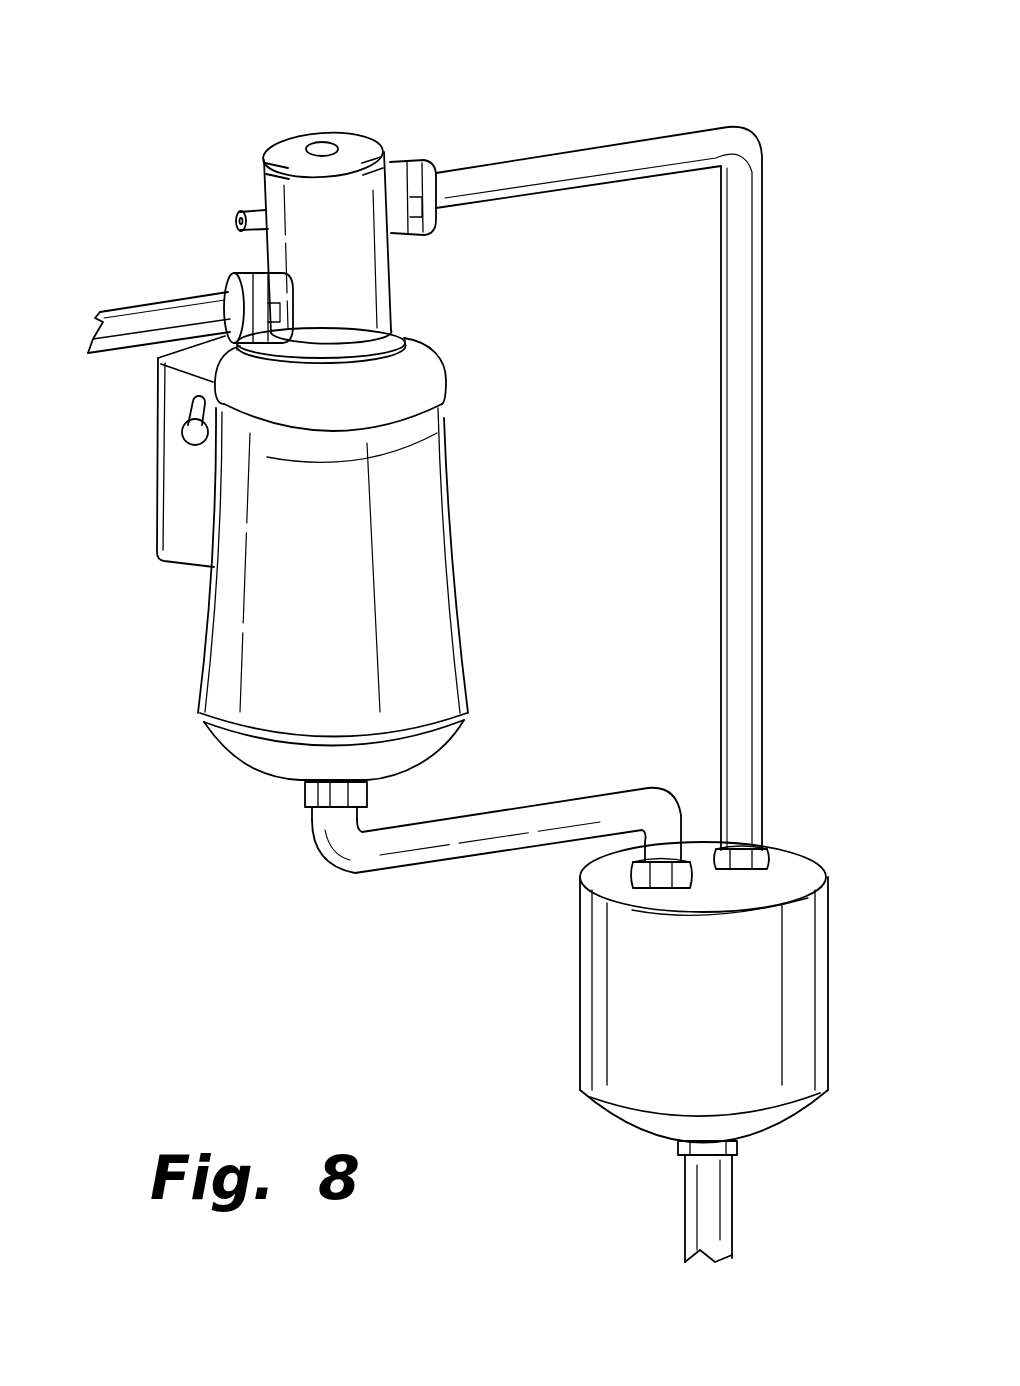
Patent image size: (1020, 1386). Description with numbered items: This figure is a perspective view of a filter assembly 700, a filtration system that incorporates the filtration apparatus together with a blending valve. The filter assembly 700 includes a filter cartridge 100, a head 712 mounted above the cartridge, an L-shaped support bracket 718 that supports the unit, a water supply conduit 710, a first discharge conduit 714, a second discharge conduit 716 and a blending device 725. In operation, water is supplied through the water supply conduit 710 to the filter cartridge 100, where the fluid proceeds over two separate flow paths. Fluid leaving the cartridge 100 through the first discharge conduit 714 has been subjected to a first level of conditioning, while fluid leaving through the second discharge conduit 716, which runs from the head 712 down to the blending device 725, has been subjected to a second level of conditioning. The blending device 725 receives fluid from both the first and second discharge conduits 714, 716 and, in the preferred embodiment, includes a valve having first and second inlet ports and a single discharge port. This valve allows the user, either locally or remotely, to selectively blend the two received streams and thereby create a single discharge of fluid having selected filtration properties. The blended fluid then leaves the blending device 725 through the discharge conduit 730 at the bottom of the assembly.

The filter assembly 700 is at (118, 134).
The head 712 is at (355, 147).
The second discharge conduit 716 is at (600, 166).
The water supply conduit 710 is at (137, 322).
The L-shaped support bracket 718 is at (180, 537).
The filter cartridge 100 is at (473, 530).
The first discharge conduit 714 is at (524, 827).
The blending device 725 is at (852, 905).
The discharge conduit 730 is at (693, 1222).